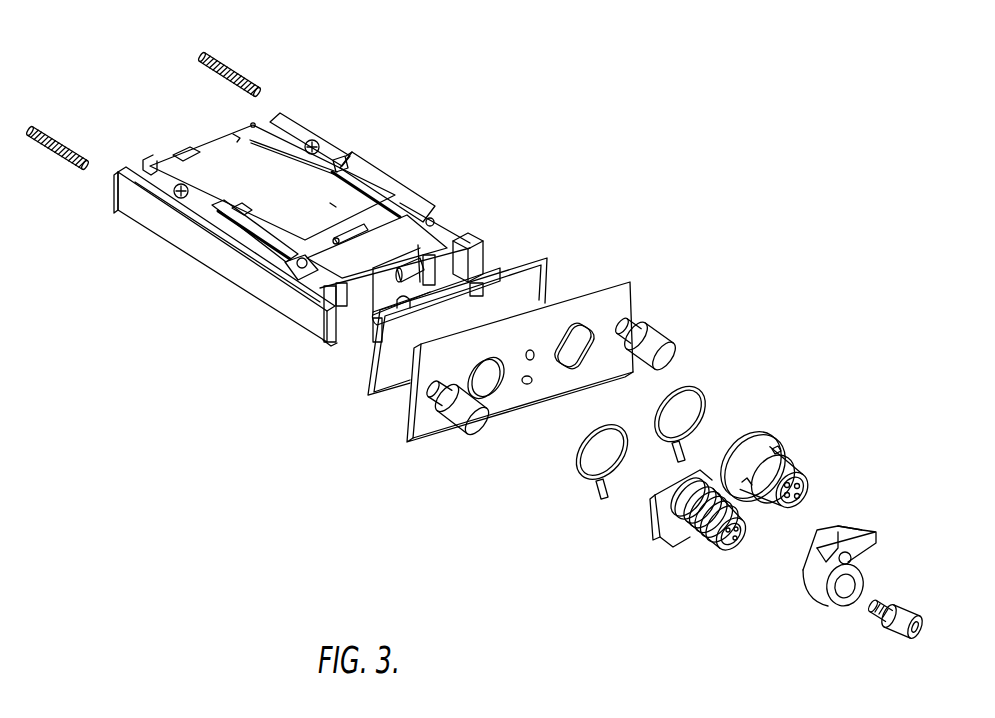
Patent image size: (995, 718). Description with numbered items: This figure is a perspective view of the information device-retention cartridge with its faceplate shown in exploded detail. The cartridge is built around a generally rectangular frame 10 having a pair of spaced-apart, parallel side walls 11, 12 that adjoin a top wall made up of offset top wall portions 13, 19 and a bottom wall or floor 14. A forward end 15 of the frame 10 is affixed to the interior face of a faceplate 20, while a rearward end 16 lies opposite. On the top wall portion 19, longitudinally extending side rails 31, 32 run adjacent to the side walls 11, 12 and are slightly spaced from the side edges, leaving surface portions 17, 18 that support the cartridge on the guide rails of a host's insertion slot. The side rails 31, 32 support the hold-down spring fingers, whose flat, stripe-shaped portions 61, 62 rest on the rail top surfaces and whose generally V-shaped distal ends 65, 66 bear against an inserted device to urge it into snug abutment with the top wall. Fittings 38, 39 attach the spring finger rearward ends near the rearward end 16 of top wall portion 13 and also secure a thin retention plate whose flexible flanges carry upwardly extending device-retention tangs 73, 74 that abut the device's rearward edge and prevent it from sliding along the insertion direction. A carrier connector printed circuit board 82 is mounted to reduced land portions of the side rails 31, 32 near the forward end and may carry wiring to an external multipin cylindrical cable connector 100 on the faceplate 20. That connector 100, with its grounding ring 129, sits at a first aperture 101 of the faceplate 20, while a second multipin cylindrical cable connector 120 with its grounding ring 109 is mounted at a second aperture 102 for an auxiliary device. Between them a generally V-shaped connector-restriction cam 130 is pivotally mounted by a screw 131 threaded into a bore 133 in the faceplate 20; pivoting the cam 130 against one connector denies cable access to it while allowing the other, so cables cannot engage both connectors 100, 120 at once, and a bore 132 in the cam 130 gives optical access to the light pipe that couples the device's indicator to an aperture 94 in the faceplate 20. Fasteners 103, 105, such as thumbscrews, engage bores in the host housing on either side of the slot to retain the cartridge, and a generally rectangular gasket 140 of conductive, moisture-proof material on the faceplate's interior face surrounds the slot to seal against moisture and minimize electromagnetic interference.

The frame 10 is at (466, 243).
The side wall 11 is at (133, 207).
The side wall 12 is at (303, 135).
The top wall portion 13 is at (288, 115).
The bottom wall 14 is at (313, 340).
The forward end 15 is at (486, 256).
The rearward end 16 is at (126, 168).
The surface portion 17 is at (208, 222).
The surface portion 18 is at (349, 156).
The top wall portion 19 is at (332, 202).
The faceplate 20 is at (632, 288).
The side rail 31 is at (247, 237).
The side rail 32 is at (390, 212).
The fitting 38 is at (183, 185).
The fitting 39 is at (336, 155).
The stripe-shaped portion 61 is at (270, 242).
The stripe-shaped portion 62 is at (395, 192).
The V-shaped distal end 65 is at (243, 210).
The V-shaped distal end 66 is at (340, 174).
The device-retention tang 73 is at (147, 160).
The device-retention tang 74 is at (252, 122).
The carrier connector printed circuit board 82 is at (340, 240).
The aperture 94 is at (531, 352).
The multipin cylindrical cable connector 100 is at (757, 428).
The first aperture 101 is at (580, 305).
The opening 102 is at (493, 402).
The fastener 103 is at (462, 436).
The fastener 105 is at (667, 328).
The grounding ring 109 is at (577, 476).
The multipin cylindrical cable connector 120 is at (655, 545).
The grounding ring 129 is at (700, 385).
The connector-restriction cam 130 is at (815, 595).
The screw 131 is at (880, 617).
The bore 132 is at (858, 525).
The bore 133 is at (528, 385).
The gasket 140 is at (548, 268).